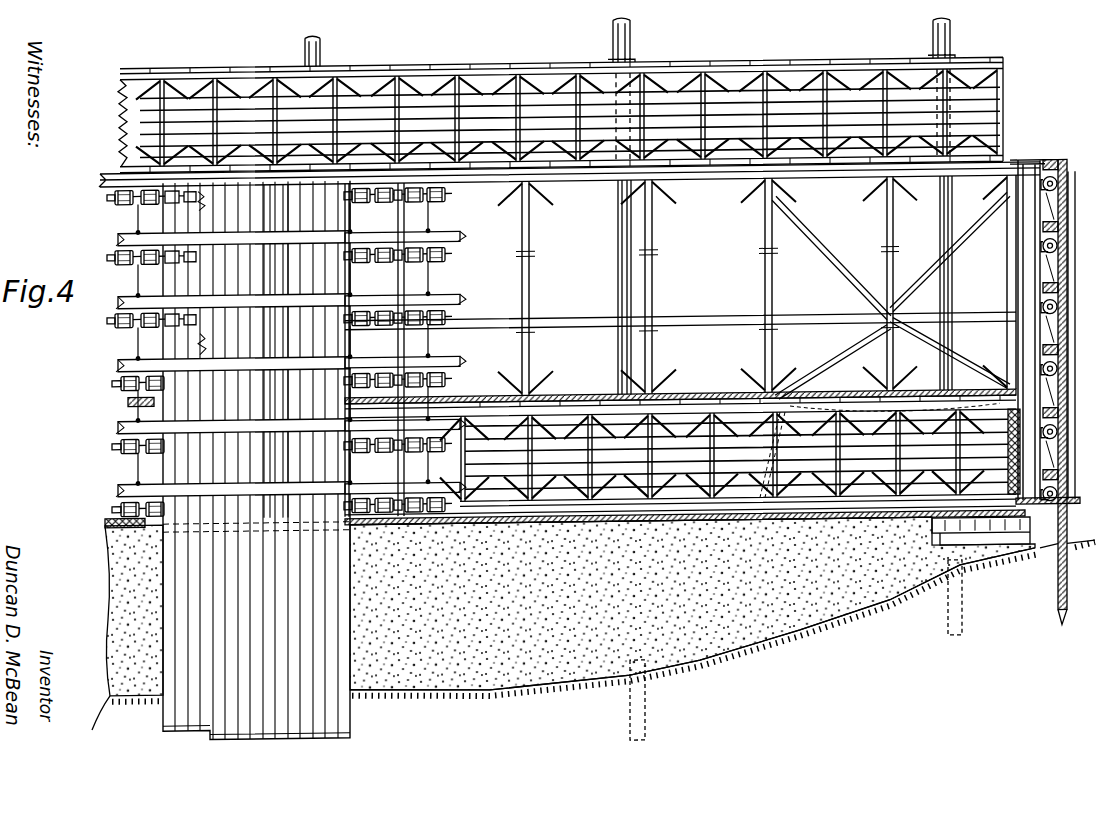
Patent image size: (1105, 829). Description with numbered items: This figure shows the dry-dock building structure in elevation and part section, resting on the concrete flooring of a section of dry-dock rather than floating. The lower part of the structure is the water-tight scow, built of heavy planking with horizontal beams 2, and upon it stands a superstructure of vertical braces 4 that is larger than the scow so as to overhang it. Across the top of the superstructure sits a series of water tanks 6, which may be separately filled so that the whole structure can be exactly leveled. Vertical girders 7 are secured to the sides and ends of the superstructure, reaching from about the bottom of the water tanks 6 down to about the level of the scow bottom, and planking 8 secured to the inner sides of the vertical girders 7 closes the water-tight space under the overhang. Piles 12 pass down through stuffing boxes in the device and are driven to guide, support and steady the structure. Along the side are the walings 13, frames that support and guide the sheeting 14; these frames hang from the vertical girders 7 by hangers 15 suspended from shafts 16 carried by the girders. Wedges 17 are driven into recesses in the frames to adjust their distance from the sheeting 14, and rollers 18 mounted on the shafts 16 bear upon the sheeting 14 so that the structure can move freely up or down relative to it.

The horizontal beams 2 is at (824, 508).
The vertical braces 4 is at (529, 244).
The water tanks 6 is at (498, 104).
The vertical girders 7 is at (1031, 185).
The planking 8 is at (1019, 462).
The piles 12 is at (953, 220).
The walings 13 is at (1068, 236).
The sheeting 14 is at (340, 578).
The hangers 15 is at (135, 343).
The shafts 16 is at (121, 450).
The wedges 17 is at (1048, 412).
The rollers 18 is at (118, 403).